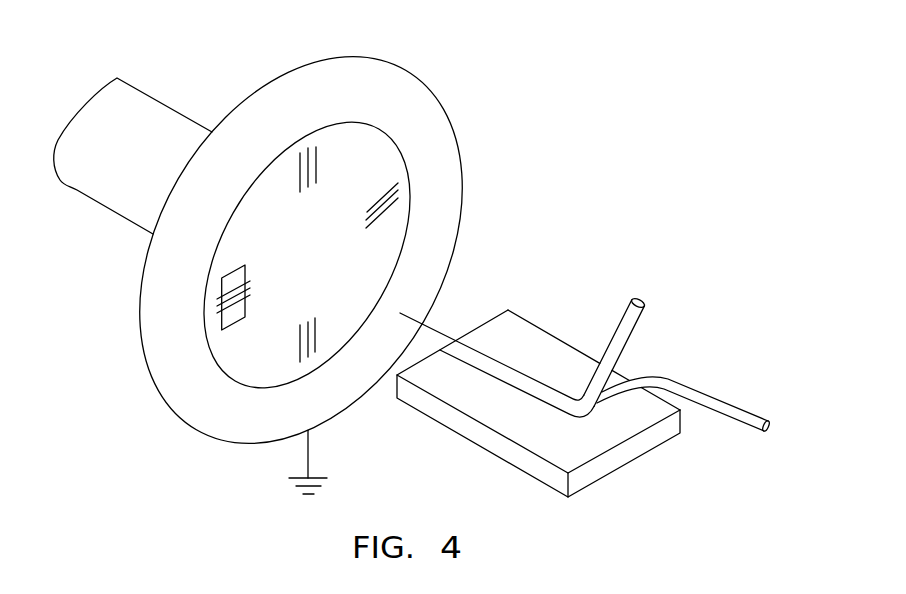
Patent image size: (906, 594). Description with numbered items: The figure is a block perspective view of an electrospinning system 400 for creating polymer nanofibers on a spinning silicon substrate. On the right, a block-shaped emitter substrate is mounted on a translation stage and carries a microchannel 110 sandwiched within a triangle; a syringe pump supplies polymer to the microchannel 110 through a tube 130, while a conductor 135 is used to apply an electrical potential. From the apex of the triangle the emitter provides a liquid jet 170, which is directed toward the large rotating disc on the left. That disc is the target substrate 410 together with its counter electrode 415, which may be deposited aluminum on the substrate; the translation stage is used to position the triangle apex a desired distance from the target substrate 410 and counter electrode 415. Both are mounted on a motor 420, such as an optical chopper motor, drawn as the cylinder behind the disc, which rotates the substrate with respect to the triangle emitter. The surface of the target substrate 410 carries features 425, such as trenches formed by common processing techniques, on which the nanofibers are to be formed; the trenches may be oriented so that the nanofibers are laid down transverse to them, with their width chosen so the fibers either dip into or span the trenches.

The electrospinning system 400 is at (528, 63).
The counter electrode 415 is at (412, 73).
The target substrate 410 is at (380, 248).
The motor 420 is at (167, 106).
The features 425 is at (230, 272).
The microchannel 110 is at (505, 373).
The liquid jet 170 is at (437, 329).
The tube 130 is at (632, 331).
The conductor 135 is at (743, 405).